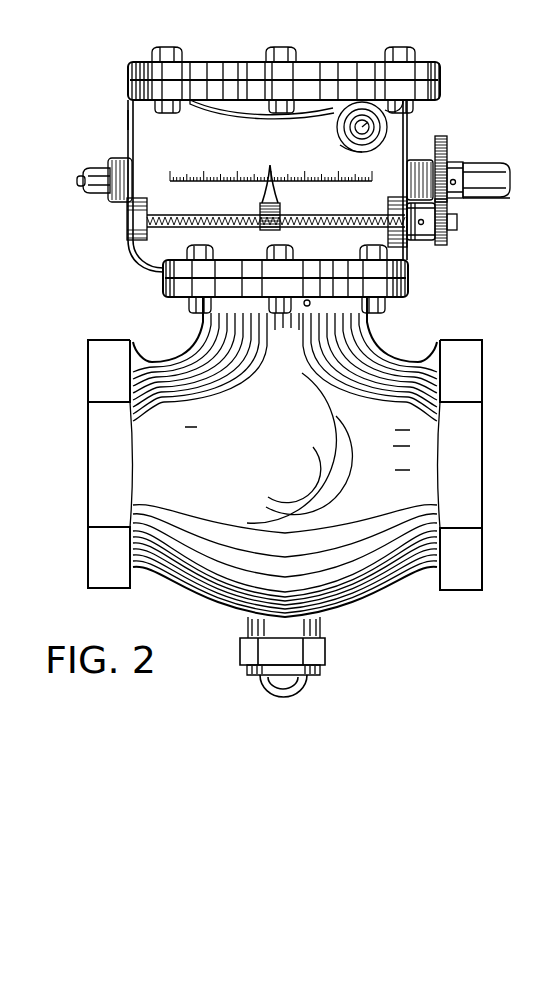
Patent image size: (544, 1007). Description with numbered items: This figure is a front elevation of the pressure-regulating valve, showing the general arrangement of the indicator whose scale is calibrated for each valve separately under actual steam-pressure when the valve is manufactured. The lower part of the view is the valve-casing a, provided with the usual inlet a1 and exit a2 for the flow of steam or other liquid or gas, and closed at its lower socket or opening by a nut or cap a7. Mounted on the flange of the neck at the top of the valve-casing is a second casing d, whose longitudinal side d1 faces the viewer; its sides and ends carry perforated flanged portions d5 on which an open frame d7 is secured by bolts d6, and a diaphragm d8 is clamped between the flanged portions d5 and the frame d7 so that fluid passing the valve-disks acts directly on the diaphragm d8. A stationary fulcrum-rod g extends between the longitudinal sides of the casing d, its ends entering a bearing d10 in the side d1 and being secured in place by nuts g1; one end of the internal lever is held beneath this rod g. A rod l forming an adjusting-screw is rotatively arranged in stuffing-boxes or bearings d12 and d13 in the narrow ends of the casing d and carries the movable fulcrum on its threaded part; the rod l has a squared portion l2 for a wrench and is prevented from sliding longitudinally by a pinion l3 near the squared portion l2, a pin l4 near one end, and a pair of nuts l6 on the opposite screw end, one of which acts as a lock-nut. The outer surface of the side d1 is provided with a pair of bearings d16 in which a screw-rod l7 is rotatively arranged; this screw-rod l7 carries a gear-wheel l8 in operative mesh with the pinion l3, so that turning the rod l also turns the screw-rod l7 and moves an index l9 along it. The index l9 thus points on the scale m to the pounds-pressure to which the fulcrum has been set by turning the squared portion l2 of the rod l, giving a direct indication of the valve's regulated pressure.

The valve-casing a is at (285, 457).
The inlet a1 is at (88, 453).
The exit a2 is at (482, 452).
The nut or cap a7 is at (322, 652).
The second casing d is at (106, 120).
The side d1 is at (267, 186).
The flanged portions d5 is at (443, 89).
The bolts d6 is at (400, 46).
The open frame d7 is at (333, 68).
The diaphragm d8 is at (240, 79).
The bearing d10 is at (408, 287).
The stuffing-box or bearing d12 is at (418, 158).
The stuffing-box or bearing d13 is at (114, 151).
The bearings d16 is at (388, 207).
The stationary fulcrum-rod g is at (354, 125).
The nuts g1 is at (345, 147).
The rod l is at (462, 170).
The squared portion l2 is at (492, 172).
The pinion l3 is at (448, 150).
The pin l4 is at (496, 200).
The nuts l6 is at (100, 192).
The screw-rod l7 is at (447, 221).
The gear-wheel l8 is at (447, 240).
The index l9 is at (280, 208).
The scale m is at (216, 182).